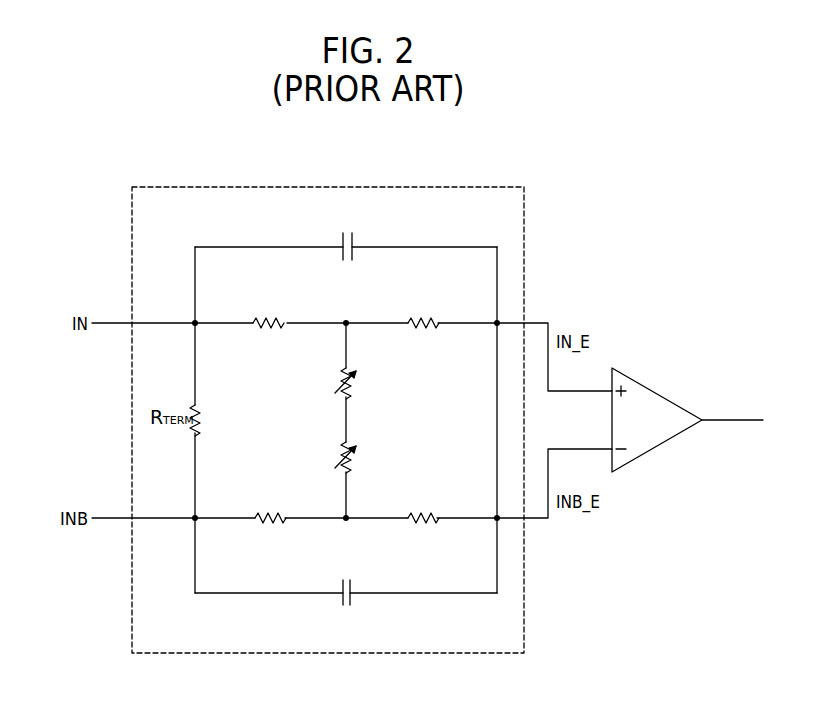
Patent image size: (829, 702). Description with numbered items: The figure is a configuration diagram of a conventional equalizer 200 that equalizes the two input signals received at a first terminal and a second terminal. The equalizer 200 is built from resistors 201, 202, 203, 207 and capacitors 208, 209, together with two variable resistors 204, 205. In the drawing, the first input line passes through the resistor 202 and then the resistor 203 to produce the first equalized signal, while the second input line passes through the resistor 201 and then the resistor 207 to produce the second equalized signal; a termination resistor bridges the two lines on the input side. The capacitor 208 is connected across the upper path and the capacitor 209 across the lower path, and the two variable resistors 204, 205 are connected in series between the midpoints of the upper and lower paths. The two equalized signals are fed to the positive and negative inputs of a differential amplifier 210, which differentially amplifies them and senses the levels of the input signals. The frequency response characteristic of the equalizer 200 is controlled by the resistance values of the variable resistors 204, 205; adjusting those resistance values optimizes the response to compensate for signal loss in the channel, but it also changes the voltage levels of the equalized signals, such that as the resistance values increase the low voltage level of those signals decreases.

The equalizer 200 is at (478, 186).
The resistor 201 is at (271, 527).
The resistor 202 is at (272, 318).
The resistor 203 is at (425, 318).
The variable resistor 204 is at (362, 385).
The variable resistor 205 is at (362, 460).
The resistor 207 is at (425, 527).
The capacitor 208 is at (355, 240).
The capacitor 209 is at (353, 603).
The differential amplifier 210 is at (645, 388).